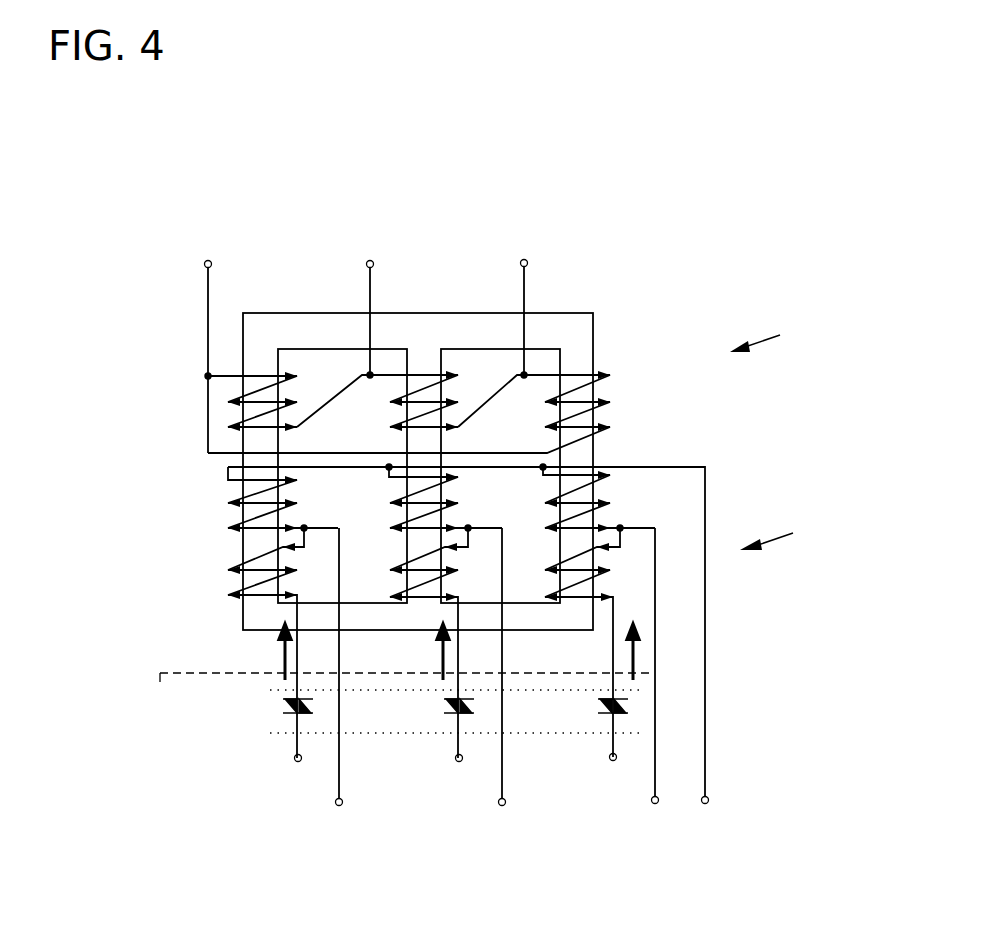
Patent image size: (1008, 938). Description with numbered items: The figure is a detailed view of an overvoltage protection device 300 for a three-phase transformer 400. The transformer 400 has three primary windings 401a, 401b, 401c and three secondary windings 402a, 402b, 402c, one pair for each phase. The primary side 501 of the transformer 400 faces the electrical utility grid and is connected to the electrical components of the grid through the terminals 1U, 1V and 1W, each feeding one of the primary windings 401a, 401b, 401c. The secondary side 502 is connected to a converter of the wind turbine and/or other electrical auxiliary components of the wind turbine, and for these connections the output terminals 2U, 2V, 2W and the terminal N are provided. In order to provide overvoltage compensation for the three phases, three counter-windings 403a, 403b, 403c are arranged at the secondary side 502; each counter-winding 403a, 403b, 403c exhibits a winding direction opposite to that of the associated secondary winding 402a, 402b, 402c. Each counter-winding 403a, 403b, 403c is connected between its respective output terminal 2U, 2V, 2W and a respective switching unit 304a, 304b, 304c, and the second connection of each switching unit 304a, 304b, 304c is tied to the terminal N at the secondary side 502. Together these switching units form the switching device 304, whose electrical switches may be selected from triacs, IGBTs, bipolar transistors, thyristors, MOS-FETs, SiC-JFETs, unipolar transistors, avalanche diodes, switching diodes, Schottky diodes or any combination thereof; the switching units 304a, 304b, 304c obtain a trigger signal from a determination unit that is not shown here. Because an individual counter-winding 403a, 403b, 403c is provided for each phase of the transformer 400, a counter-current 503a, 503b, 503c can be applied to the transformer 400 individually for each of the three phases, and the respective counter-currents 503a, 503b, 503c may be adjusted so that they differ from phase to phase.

The overvoltage protection device 300 is at (708, 227).
The three-phase transformer 400 is at (428, 323).
The primary winding 401a is at (222, 428).
The primary winding 401b is at (393, 404).
The primary winding 401c is at (545, 400).
The secondary winding 402a is at (240, 492).
The secondary winding 402b is at (393, 528).
The secondary winding 402c is at (600, 507).
The counter-winding 403a is at (237, 580).
The counter-winding 403b is at (430, 600).
The counter-winding 403c is at (585, 598).
The switching device 304 is at (188, 688).
The switching unit 304a is at (277, 708).
The switching unit 304b is at (437, 705).
The switching unit 304c is at (590, 700).
The primary side 501 is at (786, 334).
The secondary side 502 is at (798, 532).
The counter-current 503a is at (283, 663).
The counter-current 503b is at (443, 653).
The counter-current 503c is at (637, 658).
The terminal 1U is at (206, 261).
The terminal 1V is at (368, 261).
The terminal 1W is at (522, 260).
The output terminal 2U is at (338, 810).
The output terminal 2V is at (500, 810).
The output terminal 2W is at (653, 813).
The terminal N is at (293, 767).